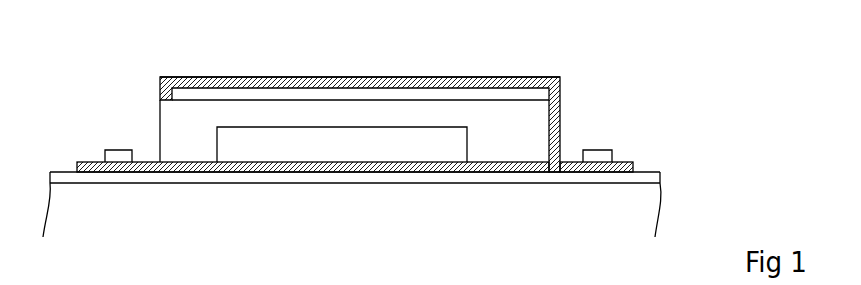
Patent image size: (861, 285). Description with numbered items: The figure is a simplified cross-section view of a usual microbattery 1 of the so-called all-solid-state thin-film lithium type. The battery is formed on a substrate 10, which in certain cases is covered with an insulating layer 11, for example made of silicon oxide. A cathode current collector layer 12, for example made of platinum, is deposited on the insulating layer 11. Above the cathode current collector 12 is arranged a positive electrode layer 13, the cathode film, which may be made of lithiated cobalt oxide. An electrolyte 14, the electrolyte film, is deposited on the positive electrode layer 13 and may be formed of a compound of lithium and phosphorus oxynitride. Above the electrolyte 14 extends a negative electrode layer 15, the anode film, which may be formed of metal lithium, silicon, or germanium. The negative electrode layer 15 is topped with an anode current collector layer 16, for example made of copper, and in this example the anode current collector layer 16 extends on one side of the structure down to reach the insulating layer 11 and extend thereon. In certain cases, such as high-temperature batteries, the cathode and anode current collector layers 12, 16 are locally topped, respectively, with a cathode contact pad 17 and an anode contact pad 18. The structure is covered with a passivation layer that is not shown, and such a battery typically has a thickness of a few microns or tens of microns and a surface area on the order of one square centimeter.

The microbattery 1 is at (70, 70).
The substrate 10 is at (652, 216).
The insulating layer 11 is at (652, 180).
The cathode current collector layer 12 is at (88, 162).
The positive electrode layer 13 is at (452, 147).
The electrolyte 14 is at (535, 123).
The negative electrode layer 15 is at (540, 95).
The anode current collector layer 16 is at (483, 78).
The cathode contact pad 17 is at (118, 149).
The anode contact pad 18 is at (598, 147).